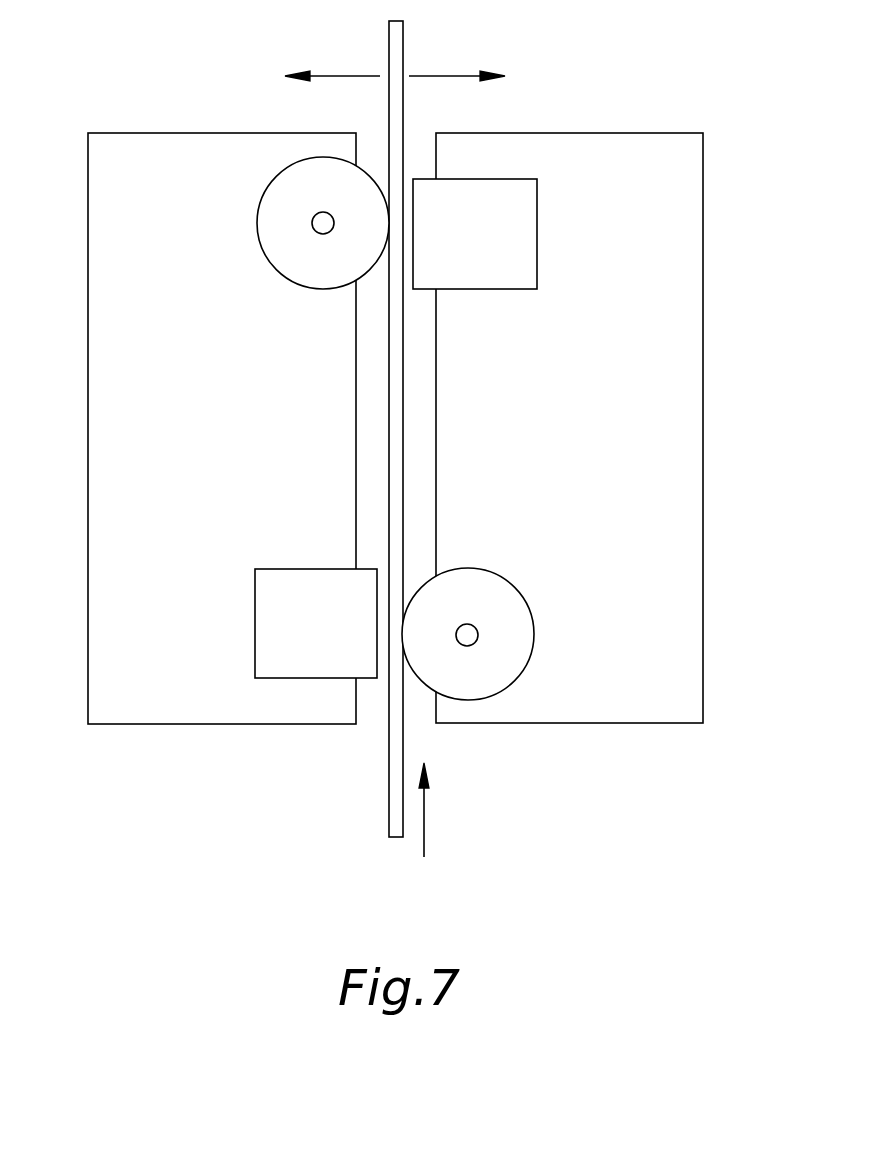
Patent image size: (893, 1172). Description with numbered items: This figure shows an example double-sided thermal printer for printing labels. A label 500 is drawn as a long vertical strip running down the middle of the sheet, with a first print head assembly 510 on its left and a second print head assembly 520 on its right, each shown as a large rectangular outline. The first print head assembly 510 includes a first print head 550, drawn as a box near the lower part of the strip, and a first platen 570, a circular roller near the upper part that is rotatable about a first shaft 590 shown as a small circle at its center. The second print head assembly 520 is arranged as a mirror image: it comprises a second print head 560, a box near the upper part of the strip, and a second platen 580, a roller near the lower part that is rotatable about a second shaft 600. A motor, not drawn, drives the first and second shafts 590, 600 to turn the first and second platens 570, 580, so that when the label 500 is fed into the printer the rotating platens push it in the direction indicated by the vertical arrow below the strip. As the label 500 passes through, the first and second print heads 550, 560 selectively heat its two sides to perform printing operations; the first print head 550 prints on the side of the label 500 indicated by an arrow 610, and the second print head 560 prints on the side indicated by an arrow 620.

The label 500 is at (389, 800).
The first print head assembly 510 is at (88, 370).
The second print head assembly 520 is at (703, 358).
The first print head 550 is at (255, 590).
The second print head 560 is at (537, 200).
The first platen 570 is at (285, 177).
The second platen 580 is at (505, 588).
The first shaft 590 is at (313, 221).
The second shaft 600 is at (478, 632).
The arrow 610 is at (348, 71).
The arrow 620 is at (448, 71).